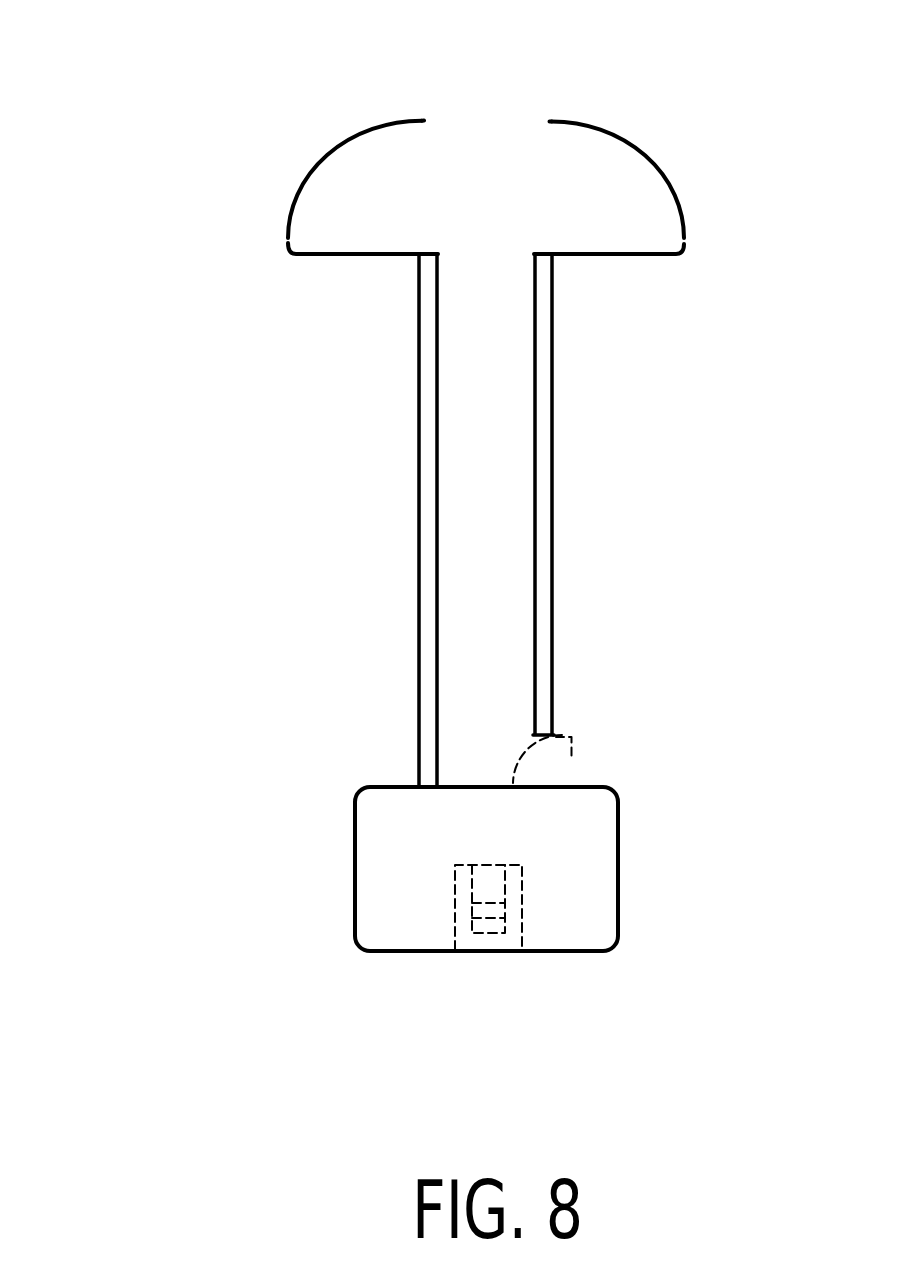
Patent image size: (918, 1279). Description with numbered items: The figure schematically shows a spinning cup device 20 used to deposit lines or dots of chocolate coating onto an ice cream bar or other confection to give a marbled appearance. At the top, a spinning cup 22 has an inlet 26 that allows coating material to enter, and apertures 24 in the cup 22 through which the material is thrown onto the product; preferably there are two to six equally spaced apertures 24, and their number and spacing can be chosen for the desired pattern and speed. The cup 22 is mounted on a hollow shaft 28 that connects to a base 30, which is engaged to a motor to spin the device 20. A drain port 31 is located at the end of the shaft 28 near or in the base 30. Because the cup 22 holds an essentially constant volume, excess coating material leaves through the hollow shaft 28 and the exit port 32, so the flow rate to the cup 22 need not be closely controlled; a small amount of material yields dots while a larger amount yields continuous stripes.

The spinning cup device 20 is at (267, 555).
The spinning cup 22 is at (640, 147).
The apertures 24 is at (285, 242).
The inlet 26 is at (445, 122).
The hollow shaft 28 is at (552, 463).
The base 30 is at (618, 867).
The drain port 31 is at (492, 918).
The exit port 32 is at (563, 735).